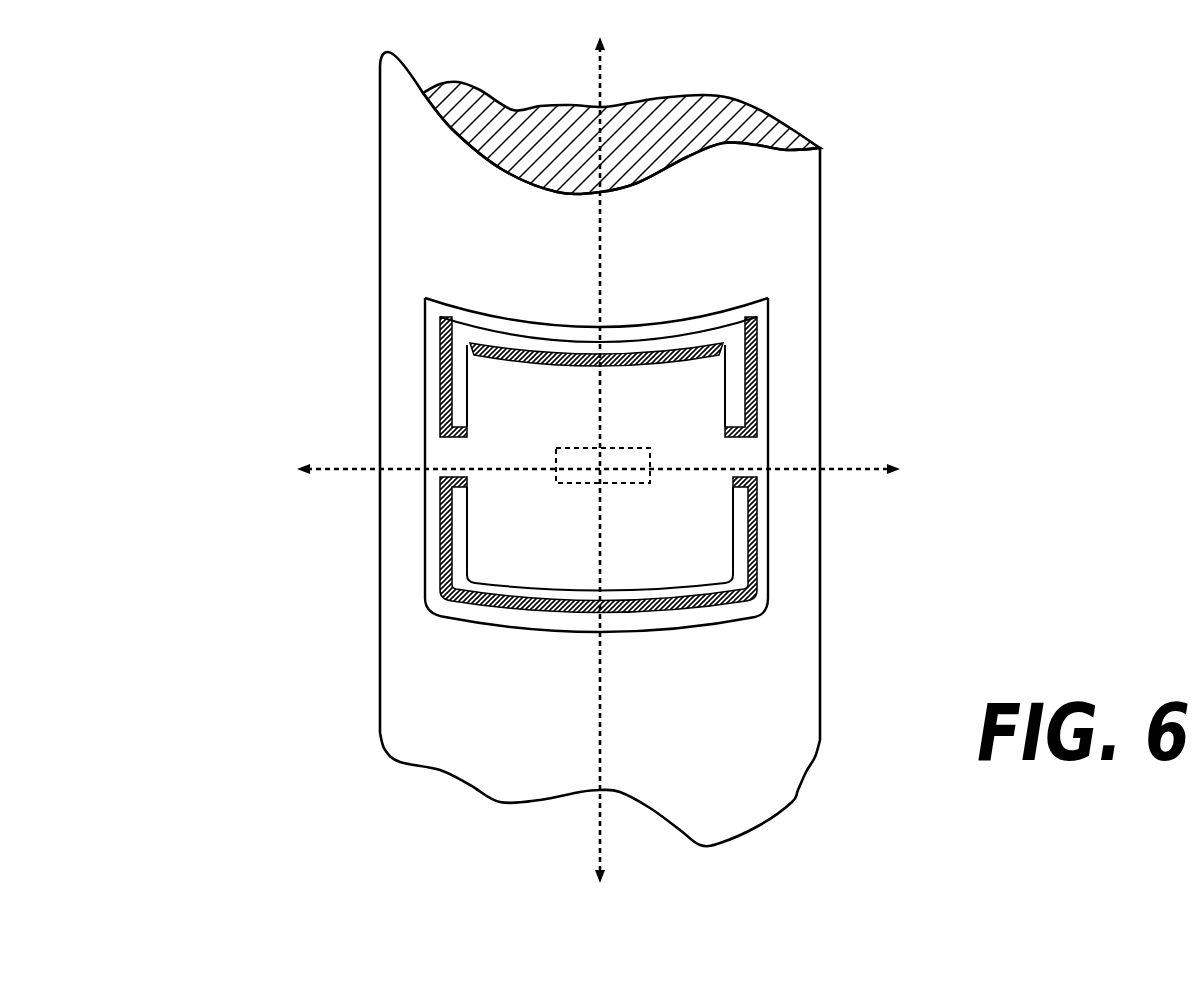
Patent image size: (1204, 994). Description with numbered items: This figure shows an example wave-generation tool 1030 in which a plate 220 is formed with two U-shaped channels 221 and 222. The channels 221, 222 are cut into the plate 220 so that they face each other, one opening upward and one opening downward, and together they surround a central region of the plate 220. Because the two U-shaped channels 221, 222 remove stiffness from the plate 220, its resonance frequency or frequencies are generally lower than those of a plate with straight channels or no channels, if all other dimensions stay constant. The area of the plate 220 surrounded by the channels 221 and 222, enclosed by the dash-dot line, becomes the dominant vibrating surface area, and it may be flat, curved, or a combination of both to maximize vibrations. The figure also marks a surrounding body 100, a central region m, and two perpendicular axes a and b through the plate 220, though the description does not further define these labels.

The wave-generation tool 1030 is at (330, 252).
The housing 100 is at (705, 249).
The plate 220 is at (666, 622).
The U-shaped channel 221 is at (466, 325).
The U-shaped channel 222 is at (462, 587).
The magnet region m is at (630, 454).
The axis a is at (600, 441).
The axis b is at (615, 468).